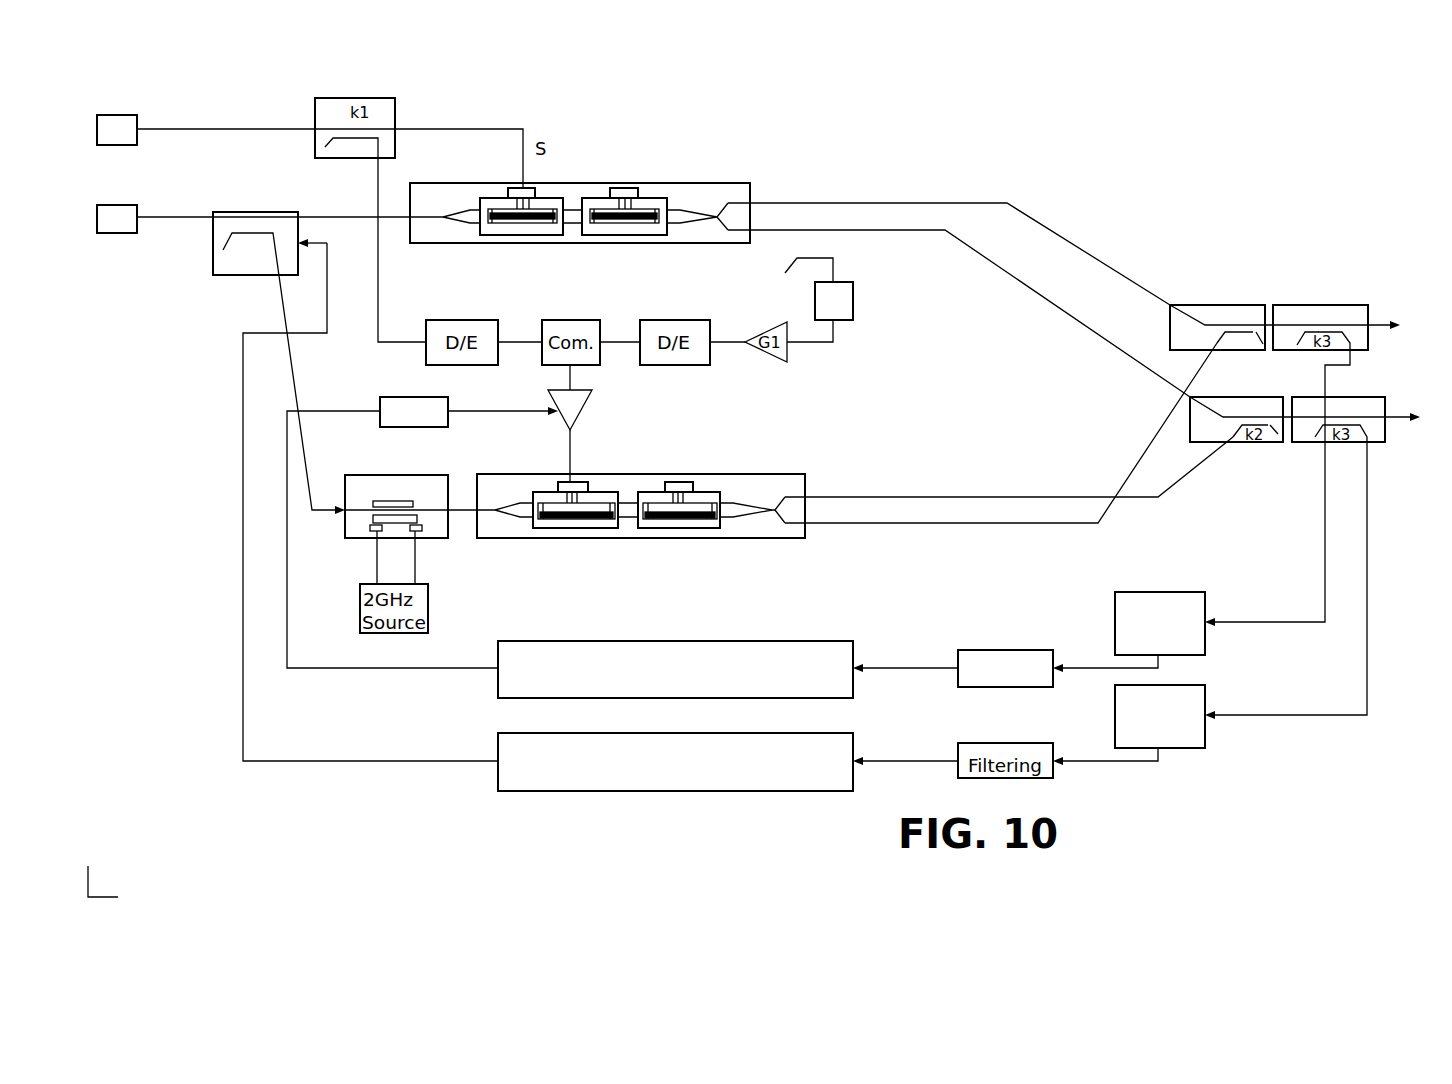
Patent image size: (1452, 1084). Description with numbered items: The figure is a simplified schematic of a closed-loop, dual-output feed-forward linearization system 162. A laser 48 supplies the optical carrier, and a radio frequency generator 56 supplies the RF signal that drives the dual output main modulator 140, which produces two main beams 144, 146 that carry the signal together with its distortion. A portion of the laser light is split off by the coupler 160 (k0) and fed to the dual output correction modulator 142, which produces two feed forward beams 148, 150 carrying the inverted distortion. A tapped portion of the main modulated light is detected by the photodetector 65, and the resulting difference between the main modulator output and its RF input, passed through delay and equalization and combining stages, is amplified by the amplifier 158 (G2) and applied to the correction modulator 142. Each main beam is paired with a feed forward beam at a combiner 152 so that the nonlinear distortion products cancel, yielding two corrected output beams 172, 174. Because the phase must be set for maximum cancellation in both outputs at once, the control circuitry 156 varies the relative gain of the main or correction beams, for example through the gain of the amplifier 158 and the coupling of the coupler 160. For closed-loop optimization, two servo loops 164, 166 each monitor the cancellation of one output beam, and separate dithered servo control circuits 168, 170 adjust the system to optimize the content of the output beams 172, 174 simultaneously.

The system 162 is at (834, 101).
The radio frequency generator 56 is at (97, 114).
The laser 48 is at (128, 204).
The coupler 160 is at (213, 258).
The dual output main modulator 140 is at (455, 245).
The dual output correction modulator 142 is at (742, 474).
The main beam 144 is at (1107, 263).
The main beam 146 is at (1077, 319).
The feed forward beam 148 is at (1062, 497).
The feed forward beam 150 is at (1037, 524).
The combiner 152 is at (1244, 305).
The output beam 172 is at (1370, 329).
The output beam 174 is at (1390, 421).
The photodetector 65 is at (853, 310).
The control circuitry 156 is at (398, 397).
The amplifier 158 is at (582, 413).
The servo loop 164 is at (978, 633).
The servo loop 166 is at (801, 813).
The servo control circuit 168 is at (765, 641).
The servo control circuit 170 is at (592, 791).